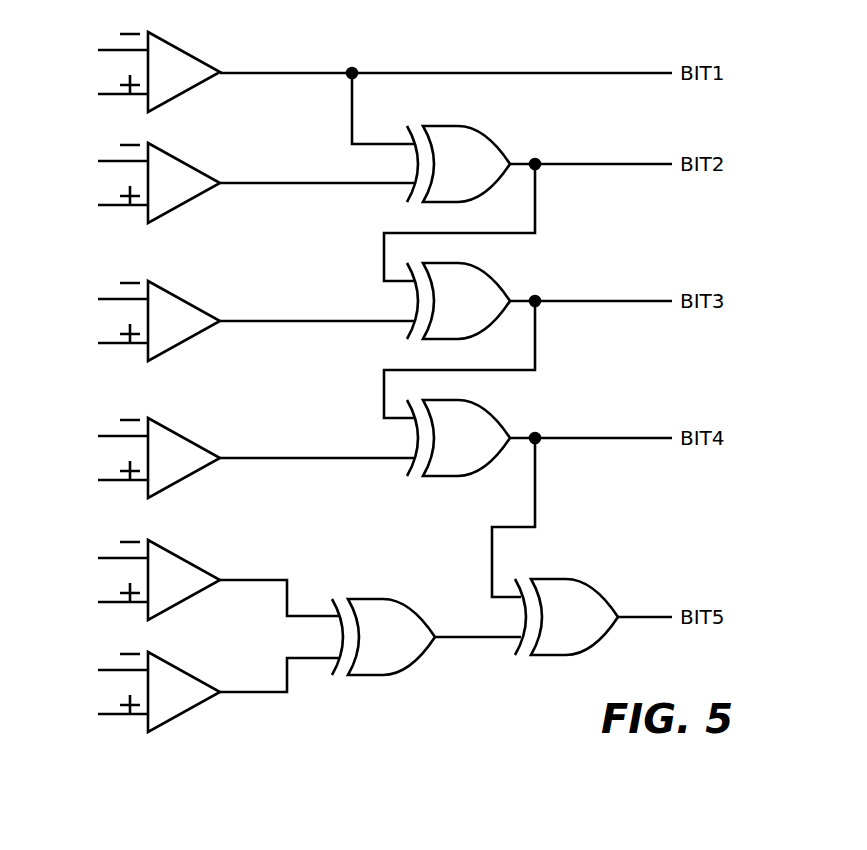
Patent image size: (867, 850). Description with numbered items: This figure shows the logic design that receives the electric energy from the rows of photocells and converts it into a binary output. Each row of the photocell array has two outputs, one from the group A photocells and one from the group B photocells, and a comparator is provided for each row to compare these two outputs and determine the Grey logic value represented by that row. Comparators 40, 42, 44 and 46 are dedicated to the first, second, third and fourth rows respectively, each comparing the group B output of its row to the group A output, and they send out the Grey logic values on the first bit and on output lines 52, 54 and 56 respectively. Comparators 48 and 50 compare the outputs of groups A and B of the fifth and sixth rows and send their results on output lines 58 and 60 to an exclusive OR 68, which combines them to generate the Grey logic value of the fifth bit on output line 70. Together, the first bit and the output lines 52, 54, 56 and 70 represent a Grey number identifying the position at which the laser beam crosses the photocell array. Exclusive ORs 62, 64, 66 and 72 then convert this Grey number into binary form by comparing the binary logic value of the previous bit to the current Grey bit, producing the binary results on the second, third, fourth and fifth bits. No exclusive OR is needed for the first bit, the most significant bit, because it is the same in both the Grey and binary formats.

The comparator 40 is at (183, 47).
The comparator 42 is at (183, 158).
The comparator 44 is at (183, 296).
The comparator 46 is at (183, 433).
The comparator 48 is at (183, 555).
The comparator 50 is at (183, 667).
The output line 52 is at (302, 182).
The output line 54 is at (308, 320).
The output line 56 is at (316, 457).
The output line 58 is at (266, 578).
The output line 60 is at (262, 694).
The exclusive OR 62 is at (497, 147).
The exclusive OR 64 is at (497, 289).
The exclusive OR 66 is at (497, 425).
The exclusive OR 68 is at (392, 601).
The output line 70 is at (477, 640).
The exclusive OR 72 is at (589, 587).